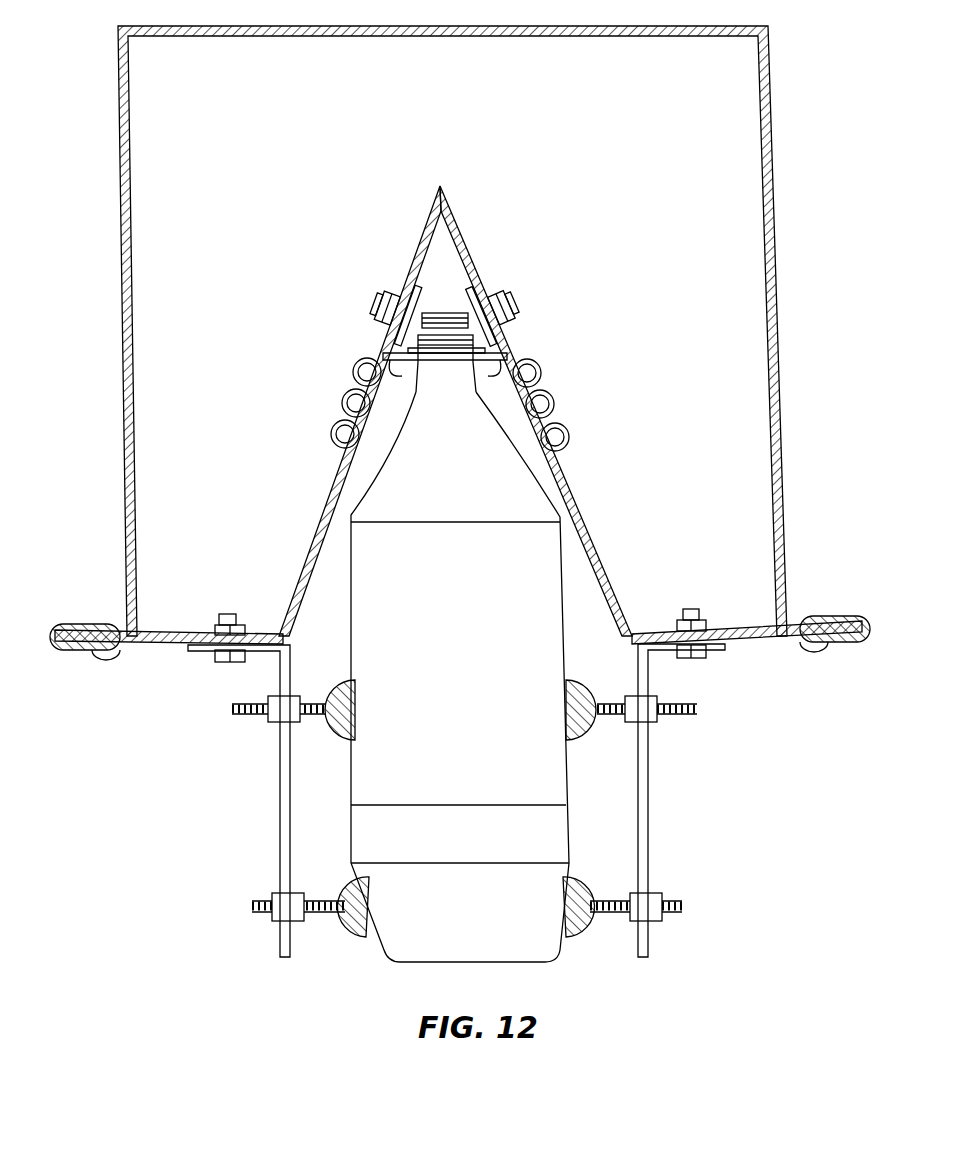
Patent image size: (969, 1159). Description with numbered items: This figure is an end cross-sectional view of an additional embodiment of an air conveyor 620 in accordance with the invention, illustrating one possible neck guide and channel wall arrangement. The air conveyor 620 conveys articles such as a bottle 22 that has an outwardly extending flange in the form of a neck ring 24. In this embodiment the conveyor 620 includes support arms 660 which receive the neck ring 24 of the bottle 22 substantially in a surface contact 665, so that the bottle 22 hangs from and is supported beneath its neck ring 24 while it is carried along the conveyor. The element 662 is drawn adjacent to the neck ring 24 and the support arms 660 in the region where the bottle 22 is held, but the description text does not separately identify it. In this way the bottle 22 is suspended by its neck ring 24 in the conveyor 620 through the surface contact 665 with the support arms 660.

The bottle 22 is at (470, 716).
The neck ring 24 is at (446, 313).
The air conveyor 620 is at (778, 409).
The support arms 660 is at (377, 360).
The neck clamp bracket 662 is at (470, 362).
The surface contact 665 is at (417, 394).